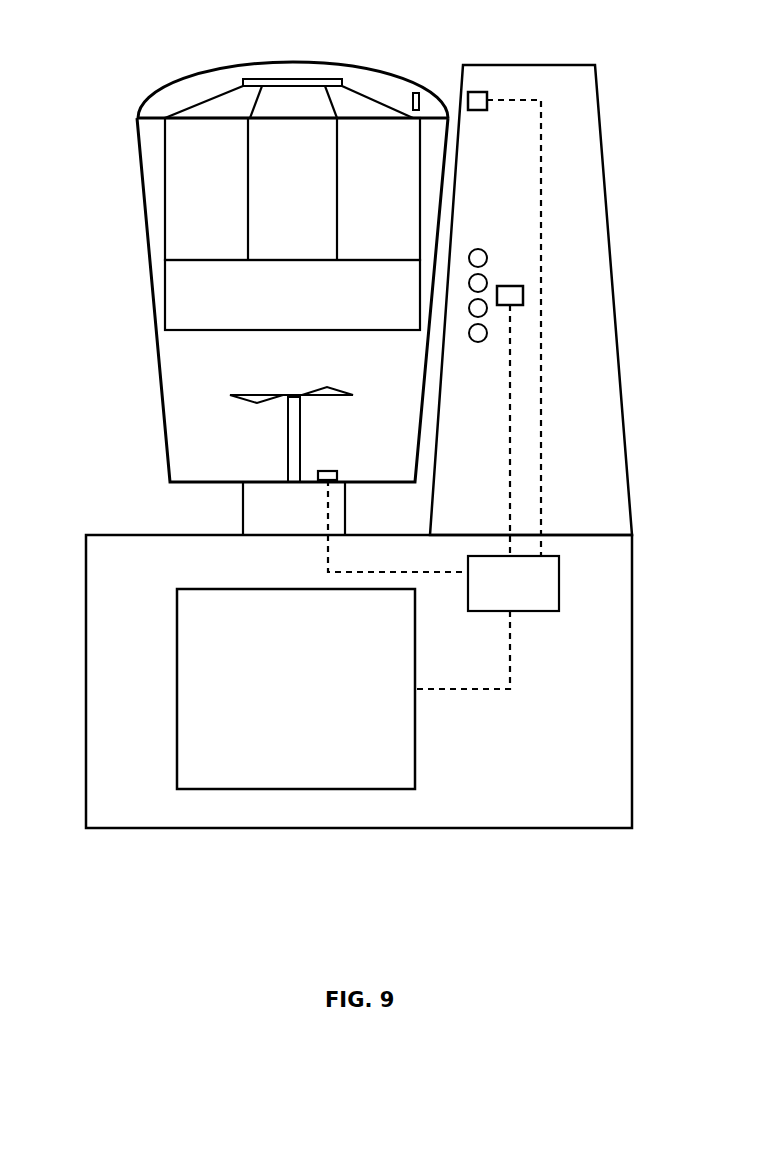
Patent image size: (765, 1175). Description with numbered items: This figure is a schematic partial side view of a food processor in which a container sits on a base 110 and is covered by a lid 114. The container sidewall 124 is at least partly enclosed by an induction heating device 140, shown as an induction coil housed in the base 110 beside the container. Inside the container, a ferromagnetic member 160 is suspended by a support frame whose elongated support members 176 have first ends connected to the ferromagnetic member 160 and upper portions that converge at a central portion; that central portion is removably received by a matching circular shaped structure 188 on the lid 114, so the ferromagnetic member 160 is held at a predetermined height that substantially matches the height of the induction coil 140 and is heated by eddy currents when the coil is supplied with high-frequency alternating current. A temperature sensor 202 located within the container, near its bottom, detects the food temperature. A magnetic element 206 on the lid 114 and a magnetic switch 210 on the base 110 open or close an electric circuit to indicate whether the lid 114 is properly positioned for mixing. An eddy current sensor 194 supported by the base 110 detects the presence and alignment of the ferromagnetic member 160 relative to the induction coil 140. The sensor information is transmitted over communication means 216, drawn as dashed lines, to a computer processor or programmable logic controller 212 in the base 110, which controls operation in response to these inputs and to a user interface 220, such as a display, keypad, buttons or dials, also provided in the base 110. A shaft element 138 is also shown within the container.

The base 110 is at (610, 788).
The lid 114 is at (173, 80).
The sidewall 124 is at (142, 182).
The fan shaft 138 is at (293, 447).
The induction heating device 140 is at (485, 253).
The ferromagnetic member 160 is at (187, 305).
The elongated support members 176 is at (248, 183).
The circular shaped structure 188 is at (293, 82).
The eddy current sensor 194 is at (520, 295).
The temperature sensor 202 is at (332, 470).
The magnetic element 206 is at (413, 97).
The magnetic switch 210 is at (480, 98).
The programmable logic controller 212 is at (547, 579).
The communication means 216 is at (512, 380).
The user interface 220 is at (192, 749).